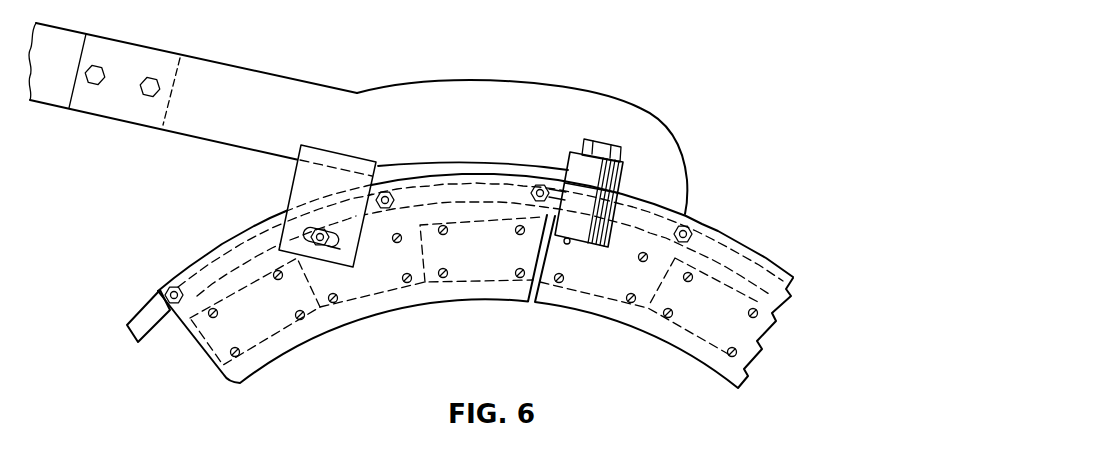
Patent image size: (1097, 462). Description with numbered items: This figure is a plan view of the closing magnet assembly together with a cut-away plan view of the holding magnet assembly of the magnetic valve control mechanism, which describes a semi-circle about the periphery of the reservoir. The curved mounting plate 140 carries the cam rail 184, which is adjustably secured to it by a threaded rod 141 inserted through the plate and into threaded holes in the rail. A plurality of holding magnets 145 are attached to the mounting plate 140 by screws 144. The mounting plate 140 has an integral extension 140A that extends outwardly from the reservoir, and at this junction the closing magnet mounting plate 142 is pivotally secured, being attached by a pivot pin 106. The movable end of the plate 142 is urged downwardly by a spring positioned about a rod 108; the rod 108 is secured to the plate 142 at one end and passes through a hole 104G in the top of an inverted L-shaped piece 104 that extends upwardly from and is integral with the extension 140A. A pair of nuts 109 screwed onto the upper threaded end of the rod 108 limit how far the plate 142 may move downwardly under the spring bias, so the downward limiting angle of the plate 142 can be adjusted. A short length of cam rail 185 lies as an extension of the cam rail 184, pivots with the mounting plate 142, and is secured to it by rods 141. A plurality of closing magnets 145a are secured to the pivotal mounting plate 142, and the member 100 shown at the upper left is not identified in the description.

The support arm 100 is at (30, 100).
The integral extension 140A is at (542, 92).
The inverted L-shaped piece 104 is at (313, 173).
The hole 104G is at (333, 245).
The pivot pin 106 is at (587, 143).
The rod 108 is at (318, 229).
The nuts 109 is at (308, 235).
The mounting plate 140 is at (657, 337).
The threaded rod 141 is at (688, 228).
The closing magnet mounting plate 142 is at (317, 337).
The screws 144 is at (231, 351).
The holding magnets 145 is at (602, 282).
The closing magnets 145a is at (362, 285).
The cam rail 184 is at (733, 257).
The short length of cam rail 185 is at (138, 327).